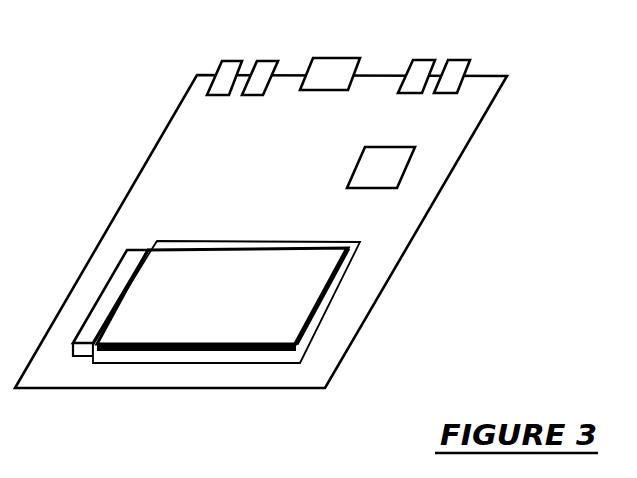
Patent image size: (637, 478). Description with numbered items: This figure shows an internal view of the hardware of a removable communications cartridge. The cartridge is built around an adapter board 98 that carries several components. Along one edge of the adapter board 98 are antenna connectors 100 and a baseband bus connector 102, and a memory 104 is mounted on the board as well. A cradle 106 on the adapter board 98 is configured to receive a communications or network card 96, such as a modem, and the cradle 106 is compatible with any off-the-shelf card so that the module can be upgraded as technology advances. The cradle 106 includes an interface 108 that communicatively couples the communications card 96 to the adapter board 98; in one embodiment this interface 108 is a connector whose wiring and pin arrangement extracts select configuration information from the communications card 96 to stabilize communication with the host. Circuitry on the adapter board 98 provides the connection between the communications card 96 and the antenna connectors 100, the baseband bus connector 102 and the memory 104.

The communications card 96 is at (222, 297).
The adapter board 98 is at (438, 195).
The antenna connectors 100 is at (230, 61).
The baseband bus connector 102 is at (342, 57).
The memory 104 is at (363, 152).
The cradle 106 is at (278, 363).
The interface 108 is at (116, 268).